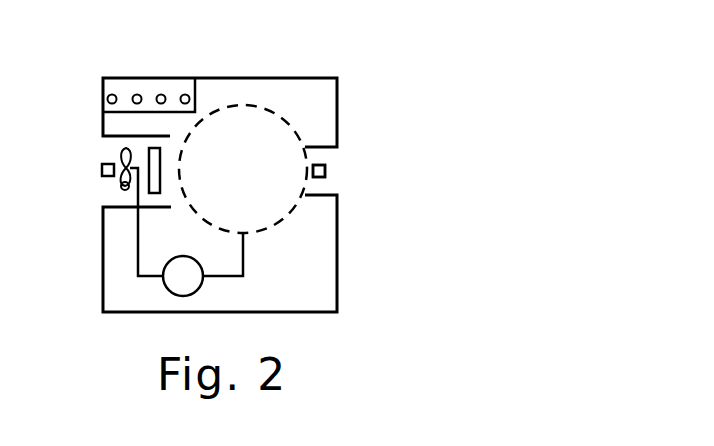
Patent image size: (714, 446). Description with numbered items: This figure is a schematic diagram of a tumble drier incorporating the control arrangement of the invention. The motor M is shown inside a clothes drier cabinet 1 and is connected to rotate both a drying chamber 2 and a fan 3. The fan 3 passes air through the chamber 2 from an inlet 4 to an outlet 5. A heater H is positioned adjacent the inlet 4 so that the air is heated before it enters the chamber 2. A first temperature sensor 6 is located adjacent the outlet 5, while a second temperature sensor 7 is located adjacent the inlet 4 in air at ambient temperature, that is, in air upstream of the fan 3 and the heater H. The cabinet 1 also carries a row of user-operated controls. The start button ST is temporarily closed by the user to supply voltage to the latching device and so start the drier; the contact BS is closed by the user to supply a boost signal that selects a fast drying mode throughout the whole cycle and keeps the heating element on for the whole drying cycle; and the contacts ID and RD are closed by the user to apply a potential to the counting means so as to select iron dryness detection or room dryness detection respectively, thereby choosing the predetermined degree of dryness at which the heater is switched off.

The clothes drier cabinet 1 is at (337, 118).
The drying chamber 2 is at (267, 230).
The fan 3 is at (120, 187).
The inlet 4 is at (105, 153).
The outlet 5 is at (335, 160).
The first temperature sensor 6 is at (327, 172).
The second temperature sensor 7 is at (100, 168).
The heater H is at (153, 193).
The motor M is at (186, 232).
The start button ST is at (112, 94).
The contact BS is at (137, 94).
The contact ID is at (161, 94).
The contact RD is at (185, 94).